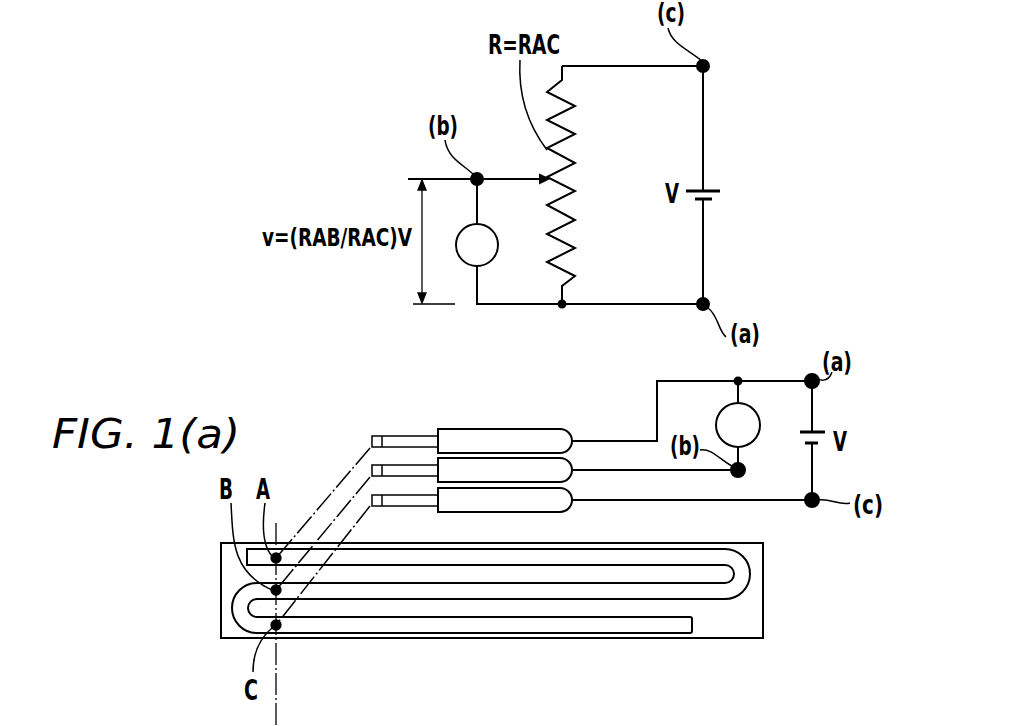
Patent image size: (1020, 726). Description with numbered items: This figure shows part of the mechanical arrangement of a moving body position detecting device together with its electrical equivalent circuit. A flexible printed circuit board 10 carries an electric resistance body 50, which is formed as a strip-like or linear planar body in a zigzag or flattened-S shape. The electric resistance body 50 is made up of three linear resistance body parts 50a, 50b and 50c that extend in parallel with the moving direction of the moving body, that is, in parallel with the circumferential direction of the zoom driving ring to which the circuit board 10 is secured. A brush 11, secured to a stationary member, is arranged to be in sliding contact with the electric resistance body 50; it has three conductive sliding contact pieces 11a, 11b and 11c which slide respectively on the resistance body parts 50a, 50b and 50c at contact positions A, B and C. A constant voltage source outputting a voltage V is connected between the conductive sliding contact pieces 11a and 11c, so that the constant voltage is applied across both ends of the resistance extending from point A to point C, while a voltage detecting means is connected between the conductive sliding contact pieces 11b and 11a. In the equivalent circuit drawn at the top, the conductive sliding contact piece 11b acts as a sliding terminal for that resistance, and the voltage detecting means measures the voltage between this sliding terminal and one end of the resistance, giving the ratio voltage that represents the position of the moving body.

The flexible printed circuit board 10 is at (740, 623).
The brush 11 is at (432, 485).
The conductive sliding contact piece 11a is at (472, 438).
The conductive sliding contact piece 11b is at (508, 470).
The conductive sliding contact piece 11c is at (540, 500).
The electric resistance body 50 is at (526, 628).
The resistance body part 50a is at (503, 562).
The resistance body part 50b is at (565, 592).
The resistance body part 50c is at (627, 626).